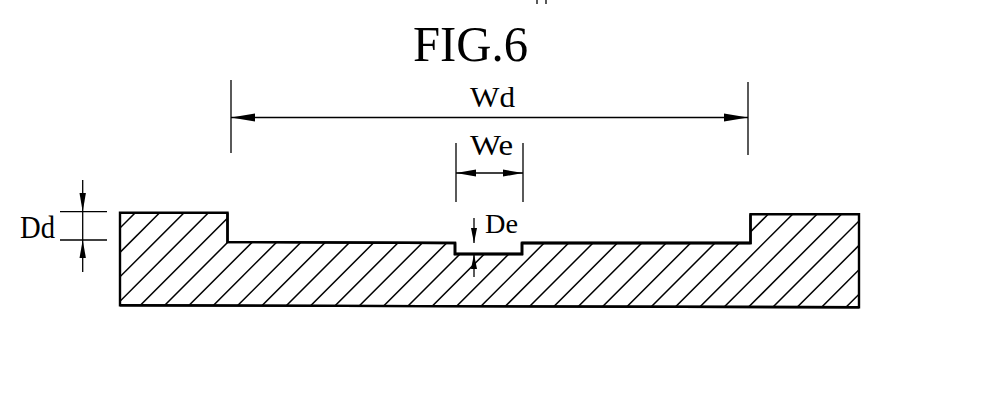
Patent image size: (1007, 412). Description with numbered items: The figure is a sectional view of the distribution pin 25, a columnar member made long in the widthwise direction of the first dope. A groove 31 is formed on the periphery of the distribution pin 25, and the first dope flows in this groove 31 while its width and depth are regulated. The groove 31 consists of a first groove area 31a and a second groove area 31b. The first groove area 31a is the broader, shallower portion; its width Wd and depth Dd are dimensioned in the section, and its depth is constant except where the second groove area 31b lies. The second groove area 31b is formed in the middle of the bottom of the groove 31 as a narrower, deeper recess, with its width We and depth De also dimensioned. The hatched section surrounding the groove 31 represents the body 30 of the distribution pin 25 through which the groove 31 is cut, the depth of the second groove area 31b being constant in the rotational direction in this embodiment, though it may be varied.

The distribution pin 25 is at (264, 318).
The substrate 30 is at (722, 308).
The groove 31 is at (716, 206).
The first groove area 31a is at (594, 233).
The second groove area 31b is at (502, 254).